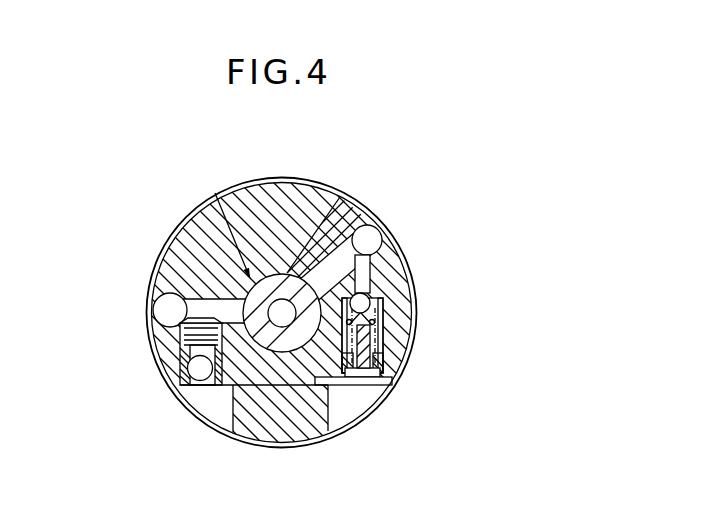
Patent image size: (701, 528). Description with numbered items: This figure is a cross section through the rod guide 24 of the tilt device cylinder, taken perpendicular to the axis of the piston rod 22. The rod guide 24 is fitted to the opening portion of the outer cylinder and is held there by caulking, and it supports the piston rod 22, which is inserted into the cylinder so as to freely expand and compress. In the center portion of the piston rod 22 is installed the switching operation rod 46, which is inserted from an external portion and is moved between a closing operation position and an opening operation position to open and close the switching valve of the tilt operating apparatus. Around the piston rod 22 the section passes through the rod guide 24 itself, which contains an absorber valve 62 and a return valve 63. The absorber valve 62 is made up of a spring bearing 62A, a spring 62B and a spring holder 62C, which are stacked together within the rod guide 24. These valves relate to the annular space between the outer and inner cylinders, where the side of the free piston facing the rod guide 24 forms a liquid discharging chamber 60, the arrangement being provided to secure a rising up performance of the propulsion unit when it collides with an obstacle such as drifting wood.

The piston rod 22 is at (185, 228).
The rod guide 24 is at (235, 222).
The switching operation rod 46 is at (283, 300).
The liquid discharging chamber 60 is at (333, 415).
The absorber valve 62 is at (424, 346).
The spring bearing 62A is at (372, 385).
The spring 62B is at (380, 353).
The spring holder 62C is at (378, 322).
The return valve 63 is at (200, 368).